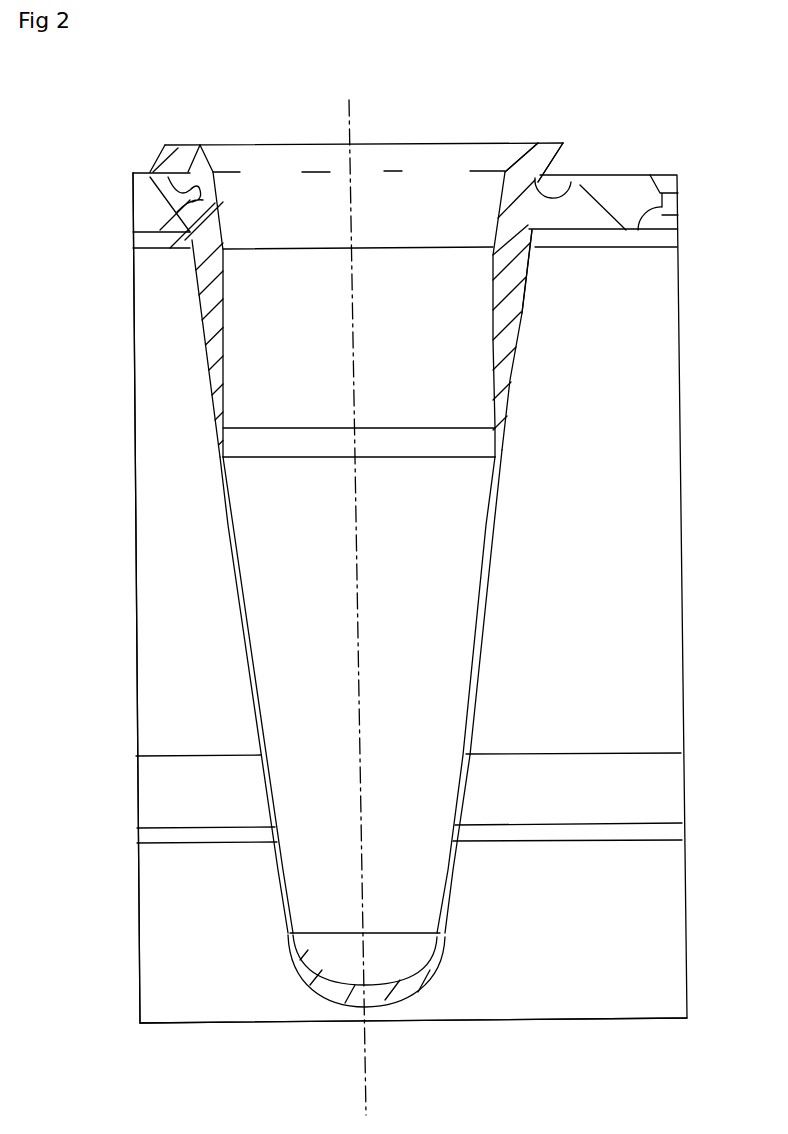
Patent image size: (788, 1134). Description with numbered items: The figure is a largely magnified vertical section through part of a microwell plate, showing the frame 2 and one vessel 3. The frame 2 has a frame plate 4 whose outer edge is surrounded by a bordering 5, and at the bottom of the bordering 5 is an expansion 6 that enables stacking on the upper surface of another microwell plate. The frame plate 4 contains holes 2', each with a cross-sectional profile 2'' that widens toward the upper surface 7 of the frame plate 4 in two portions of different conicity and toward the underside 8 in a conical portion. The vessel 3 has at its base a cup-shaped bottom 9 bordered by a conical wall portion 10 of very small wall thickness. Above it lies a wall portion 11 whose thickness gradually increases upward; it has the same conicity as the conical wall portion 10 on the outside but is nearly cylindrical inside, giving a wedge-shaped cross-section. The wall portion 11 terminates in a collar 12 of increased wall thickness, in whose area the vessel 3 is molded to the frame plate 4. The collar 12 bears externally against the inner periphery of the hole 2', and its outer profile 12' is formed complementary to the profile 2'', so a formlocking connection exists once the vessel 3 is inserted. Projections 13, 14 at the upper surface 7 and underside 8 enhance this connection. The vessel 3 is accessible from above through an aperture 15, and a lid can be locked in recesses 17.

The frame 2 is at (430, 548).
The holes 2' is at (162, 287).
The profile of the cross-section 2'' is at (179, 143).
The vessel 3 is at (505, 528).
The frame plate 4 is at (150, 213).
The bordering 5 is at (643, 697).
The expansion 6 is at (655, 971).
The upper surface 7 is at (133, 172).
The underside 8 is at (140, 250).
The cup-shaped bottom 9 is at (393, 1013).
The conical wall portion 10 is at (476, 667).
The wall portion 11 is at (510, 313).
The collar 12 is at (529, 132).
The outer profile of the cross-section 12' is at (603, 136).
The projection 13 is at (567, 145).
The projection 14 is at (553, 250).
The apertures 15 is at (296, 122).
The recesses 17 is at (643, 252).